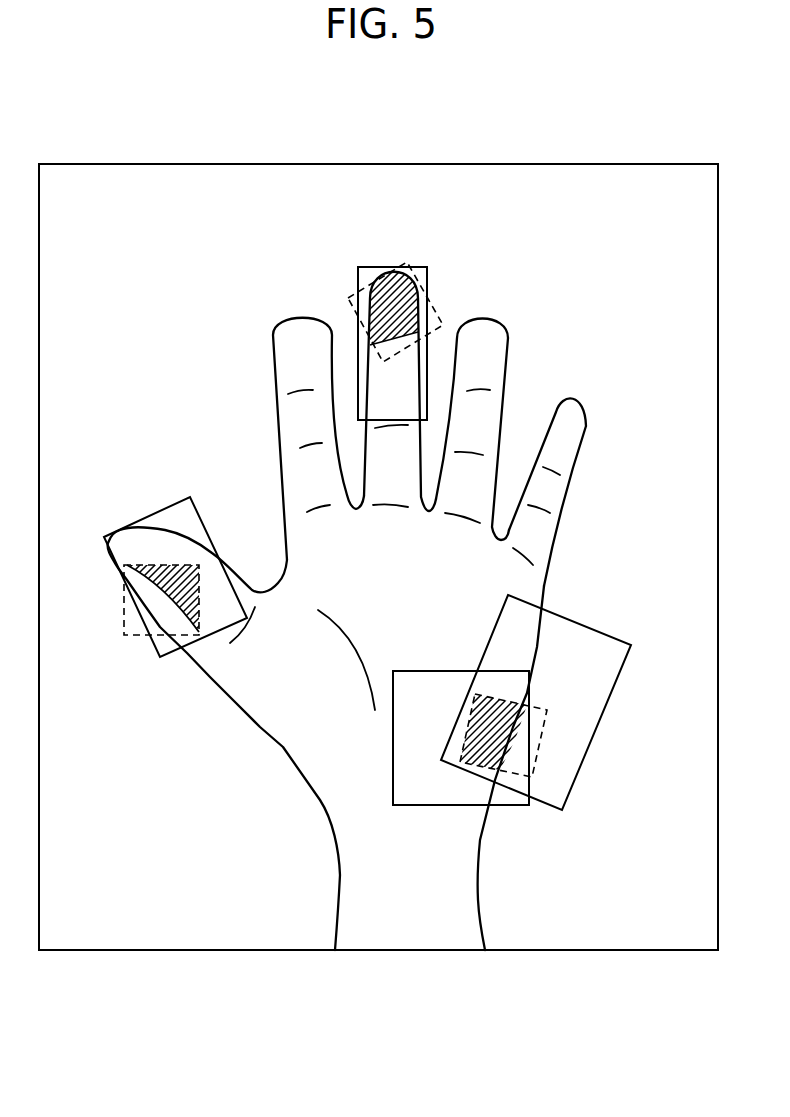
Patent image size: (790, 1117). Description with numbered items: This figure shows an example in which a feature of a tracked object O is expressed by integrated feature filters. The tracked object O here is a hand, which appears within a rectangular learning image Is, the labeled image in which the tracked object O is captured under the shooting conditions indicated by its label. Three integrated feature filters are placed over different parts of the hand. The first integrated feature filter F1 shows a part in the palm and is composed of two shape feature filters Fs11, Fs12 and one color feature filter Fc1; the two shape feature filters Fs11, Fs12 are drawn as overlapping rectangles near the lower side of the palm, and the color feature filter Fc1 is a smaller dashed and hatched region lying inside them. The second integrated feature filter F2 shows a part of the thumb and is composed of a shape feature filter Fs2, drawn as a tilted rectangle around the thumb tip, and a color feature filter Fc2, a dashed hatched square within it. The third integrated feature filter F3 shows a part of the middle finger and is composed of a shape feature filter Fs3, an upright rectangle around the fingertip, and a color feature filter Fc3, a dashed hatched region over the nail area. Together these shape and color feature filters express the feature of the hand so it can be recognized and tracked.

The learning image Is is at (486, 164).
The tracked object O is at (356, 577).
The first integrated feature filter F1 is at (542, 735).
The second integrated feature filter F2 is at (161, 609).
The third integrated feature filter F3 is at (398, 357).
The shape feature filter Fs11 is at (511, 806).
The shape feature filter Fs12 is at (578, 772).
The shape feature filter Fs2 is at (185, 650).
The shape feature filter Fs3 is at (368, 267).
The color feature filter Fc1 is at (538, 760).
The color feature filter Fc2 is at (123, 615).
The color feature filter Fc3 is at (349, 297).